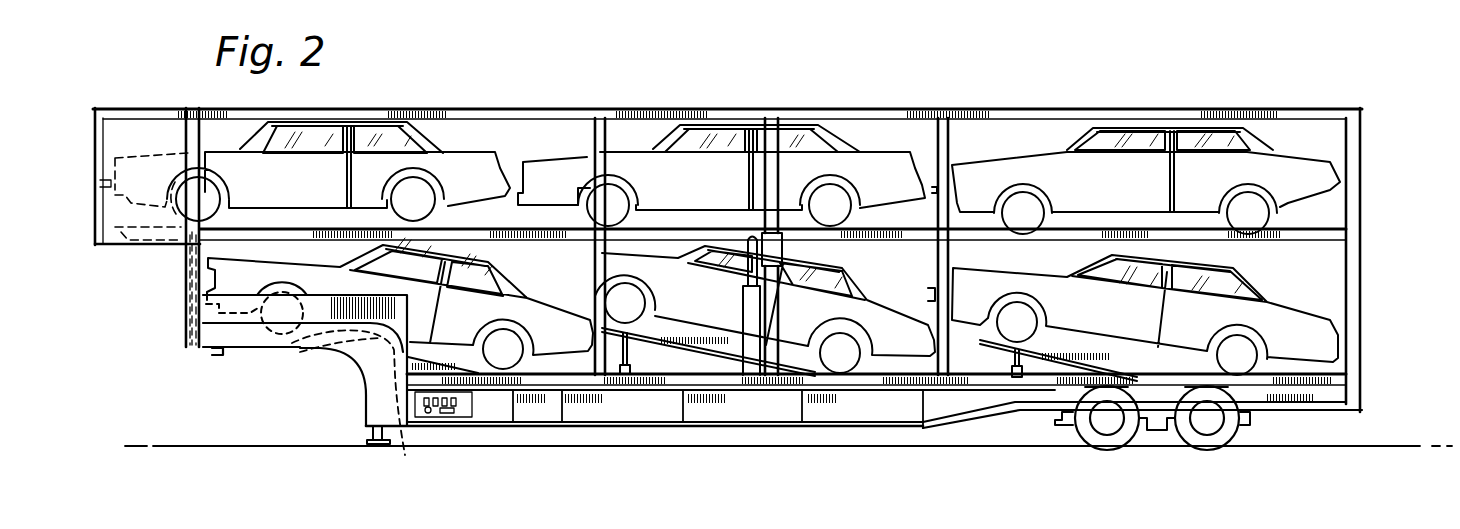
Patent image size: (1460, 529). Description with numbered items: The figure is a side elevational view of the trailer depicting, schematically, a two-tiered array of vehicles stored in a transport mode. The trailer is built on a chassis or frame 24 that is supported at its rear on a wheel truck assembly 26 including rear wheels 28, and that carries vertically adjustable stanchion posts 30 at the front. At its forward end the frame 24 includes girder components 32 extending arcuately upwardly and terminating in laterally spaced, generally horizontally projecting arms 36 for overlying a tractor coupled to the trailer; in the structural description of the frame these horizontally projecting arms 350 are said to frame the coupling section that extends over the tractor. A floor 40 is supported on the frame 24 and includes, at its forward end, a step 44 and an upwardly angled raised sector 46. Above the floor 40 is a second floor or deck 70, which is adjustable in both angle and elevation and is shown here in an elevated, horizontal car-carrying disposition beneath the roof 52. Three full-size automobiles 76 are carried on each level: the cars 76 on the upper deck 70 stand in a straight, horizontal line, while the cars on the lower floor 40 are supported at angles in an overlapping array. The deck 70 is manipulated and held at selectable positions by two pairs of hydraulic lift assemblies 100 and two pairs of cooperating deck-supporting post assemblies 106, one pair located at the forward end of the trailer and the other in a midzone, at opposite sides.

The chassis or frame 24 is at (777, 405).
The wheel truck assembly 26 is at (1158, 436).
The rear wheels 28 is at (1092, 440).
The stanchion posts 30 is at (369, 435).
The girder components 32 is at (367, 377).
The arms 36 is at (228, 335).
The arms 350 is at (250, 352).
The floor 40 is at (878, 384).
The step 44 is at (355, 406).
The raised sector 46 is at (292, 352).
The roof 52 is at (1082, 113).
The deck 70 is at (525, 226).
The automobiles 76 is at (865, 165).
The hydraulic lift assemblies 100 is at (186, 291).
The deck-supporting post assemblies 106 is at (187, 326).